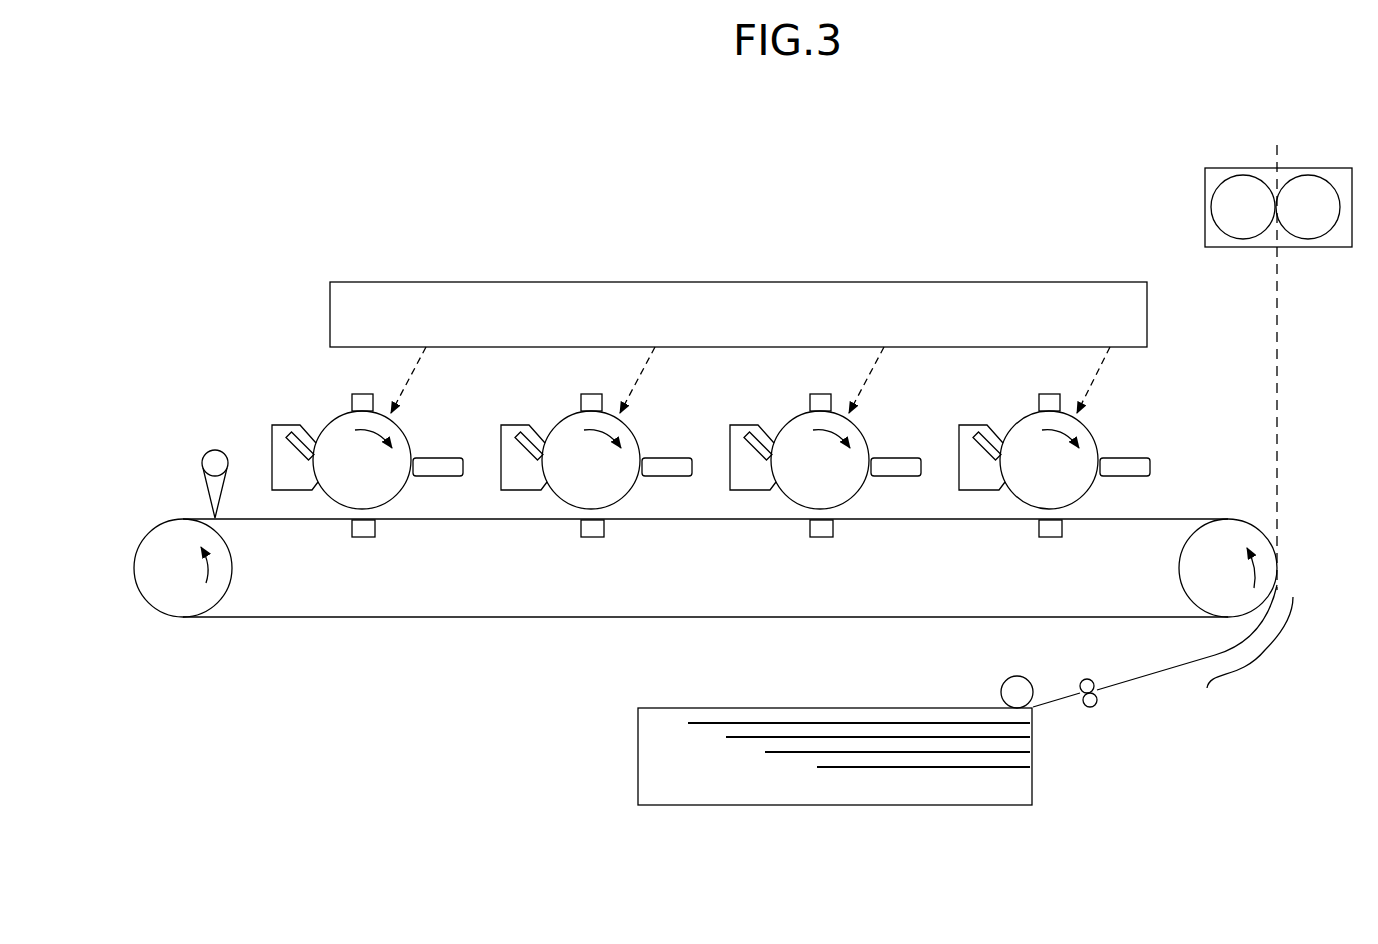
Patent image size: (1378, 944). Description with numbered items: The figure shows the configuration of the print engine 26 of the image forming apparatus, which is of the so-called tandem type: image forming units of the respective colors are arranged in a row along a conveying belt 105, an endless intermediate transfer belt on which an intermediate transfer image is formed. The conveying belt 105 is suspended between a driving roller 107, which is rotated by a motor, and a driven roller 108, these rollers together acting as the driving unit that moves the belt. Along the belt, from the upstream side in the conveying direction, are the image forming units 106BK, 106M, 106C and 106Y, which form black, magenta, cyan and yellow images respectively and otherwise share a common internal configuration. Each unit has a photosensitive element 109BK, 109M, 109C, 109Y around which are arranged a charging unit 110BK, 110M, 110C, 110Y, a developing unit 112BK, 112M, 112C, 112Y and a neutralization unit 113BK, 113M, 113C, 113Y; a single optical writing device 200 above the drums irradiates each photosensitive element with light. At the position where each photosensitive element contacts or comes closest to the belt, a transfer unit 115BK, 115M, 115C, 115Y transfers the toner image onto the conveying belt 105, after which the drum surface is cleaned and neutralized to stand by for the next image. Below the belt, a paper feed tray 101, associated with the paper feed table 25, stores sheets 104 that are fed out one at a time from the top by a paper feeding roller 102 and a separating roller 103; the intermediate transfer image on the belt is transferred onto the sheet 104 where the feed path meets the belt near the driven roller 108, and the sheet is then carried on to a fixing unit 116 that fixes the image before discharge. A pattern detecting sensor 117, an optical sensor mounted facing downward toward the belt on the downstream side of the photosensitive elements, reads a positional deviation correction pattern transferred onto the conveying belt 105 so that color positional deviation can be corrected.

The paper feed table 25 is at (615, 802).
The print engine 26 is at (175, 258).
The paper feed tray 101 is at (645, 706).
The paper feeding roller 102 is at (1005, 682).
The separating roller 103 is at (1096, 708).
The sheet 104 is at (805, 707).
The conveying belt 105 is at (515, 620).
The driving roller 107 is at (150, 600).
The driven roller 108 is at (1187, 600).
The fixing unit 116 is at (1340, 168).
The pattern detecting sensor 117 is at (203, 456).
The optical writing device 200 is at (1148, 284).
The image forming unit 106Y is at (432, 385).
The image forming unit 106C is at (661, 385).
The image forming unit 106M is at (890, 385).
The image forming unit 106BK is at (1115, 390).
The photosensitive element 109Y is at (398, 495).
The photosensitive element 109C is at (627, 495).
The photosensitive element 109M is at (856, 495).
The photosensitive element 109BK is at (1085, 495).
The charging unit 110Y is at (360, 394).
The charging unit 110C is at (589, 394).
The charging unit 110M is at (818, 394).
The charging unit 110BK is at (1047, 394).
The developing unit 112Y is at (437, 458).
The developing unit 112C is at (666, 458).
The developing unit 112M is at (895, 458).
The developing unit 112BK is at (1124, 458).
The neutralization unit 113Y is at (282, 425).
The neutralization unit 113C is at (511, 425).
The neutralization unit 113M is at (740, 425).
The neutralization unit 113BK is at (969, 425).
The transfer unit 115Y is at (364, 538).
The transfer unit 115C is at (593, 538).
The transfer unit 115M is at (822, 538).
The transfer unit 115BK is at (1051, 538).